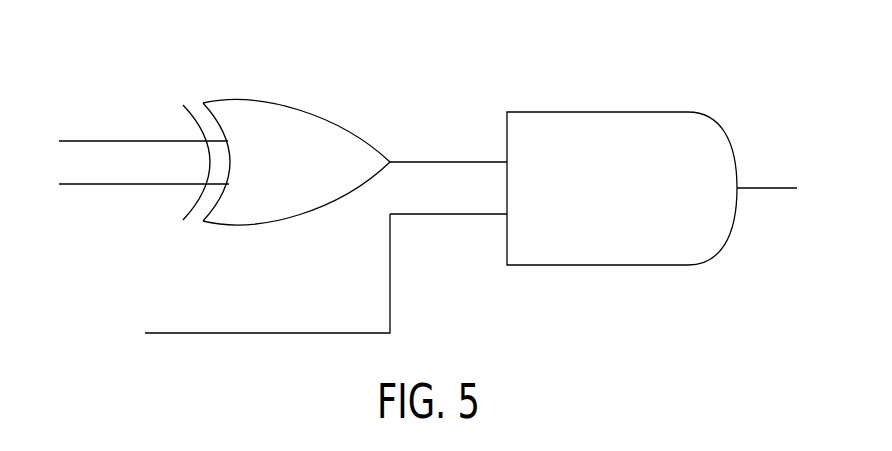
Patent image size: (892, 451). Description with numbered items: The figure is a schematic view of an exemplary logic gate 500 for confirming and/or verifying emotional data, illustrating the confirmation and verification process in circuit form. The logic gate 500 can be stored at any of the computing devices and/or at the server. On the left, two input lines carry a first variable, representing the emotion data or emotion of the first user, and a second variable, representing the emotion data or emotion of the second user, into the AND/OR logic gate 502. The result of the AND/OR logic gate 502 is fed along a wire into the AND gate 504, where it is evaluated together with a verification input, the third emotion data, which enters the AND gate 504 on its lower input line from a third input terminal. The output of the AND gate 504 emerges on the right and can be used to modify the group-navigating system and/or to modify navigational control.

The logic gate 500 is at (424, 182).
The AND/OR logic gate 502 is at (278, 97).
The AND gate 504 is at (622, 110).